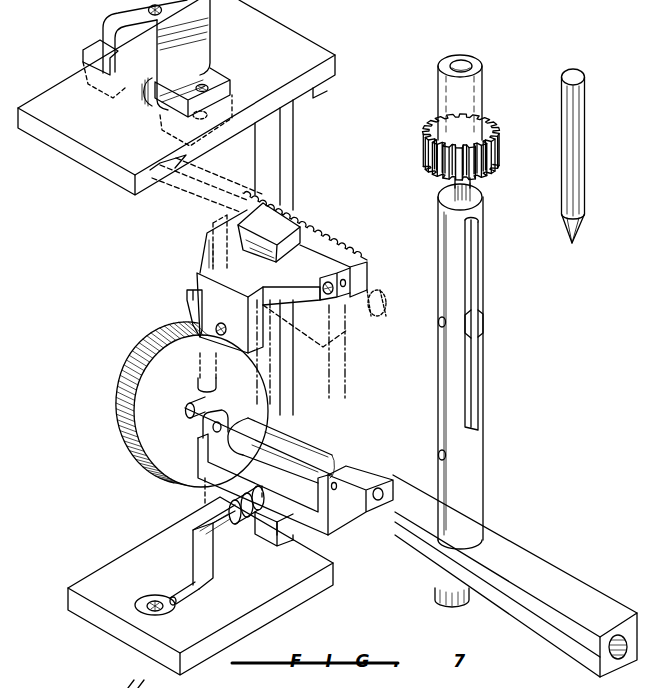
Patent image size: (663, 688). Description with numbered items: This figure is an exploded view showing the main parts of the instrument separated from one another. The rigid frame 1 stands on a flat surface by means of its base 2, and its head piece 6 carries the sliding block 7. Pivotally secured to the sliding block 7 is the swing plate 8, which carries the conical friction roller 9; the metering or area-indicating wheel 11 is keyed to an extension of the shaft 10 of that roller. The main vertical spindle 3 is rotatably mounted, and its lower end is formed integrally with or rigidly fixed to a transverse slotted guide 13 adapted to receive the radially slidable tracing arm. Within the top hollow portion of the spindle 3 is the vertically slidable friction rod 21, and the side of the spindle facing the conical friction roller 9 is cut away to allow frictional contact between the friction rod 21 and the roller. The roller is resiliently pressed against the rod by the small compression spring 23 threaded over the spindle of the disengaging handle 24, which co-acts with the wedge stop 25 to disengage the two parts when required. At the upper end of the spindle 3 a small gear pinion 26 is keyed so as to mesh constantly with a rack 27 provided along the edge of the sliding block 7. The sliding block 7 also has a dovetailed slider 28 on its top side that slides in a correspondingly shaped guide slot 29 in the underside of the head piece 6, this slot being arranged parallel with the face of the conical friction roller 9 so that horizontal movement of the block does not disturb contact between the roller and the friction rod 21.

The rigid frame 1 is at (288, 170).
The base 2 is at (153, 545).
The main vertical spindle 3 is at (472, 462).
The head piece 6 is at (287, 48).
The sliding block 7 is at (222, 253).
The swing plate 8 is at (337, 523).
The conical friction roller 9 is at (318, 448).
The shaft 10 is at (190, 420).
The metering or area-indicating wheel 11 is at (116, 405).
The transverse slotted guide 13 is at (517, 553).
The friction rod 21 is at (582, 158).
The small compression spring 23 is at (262, 505).
The disengaging handle 24 is at (177, 587).
The wedge stop 25 is at (187, 304).
The small gear pinion 26 is at (500, 147).
The rack 27 is at (348, 245).
The dovetailed slider 28 is at (212, 220).
The guide slot 29 is at (167, 173).